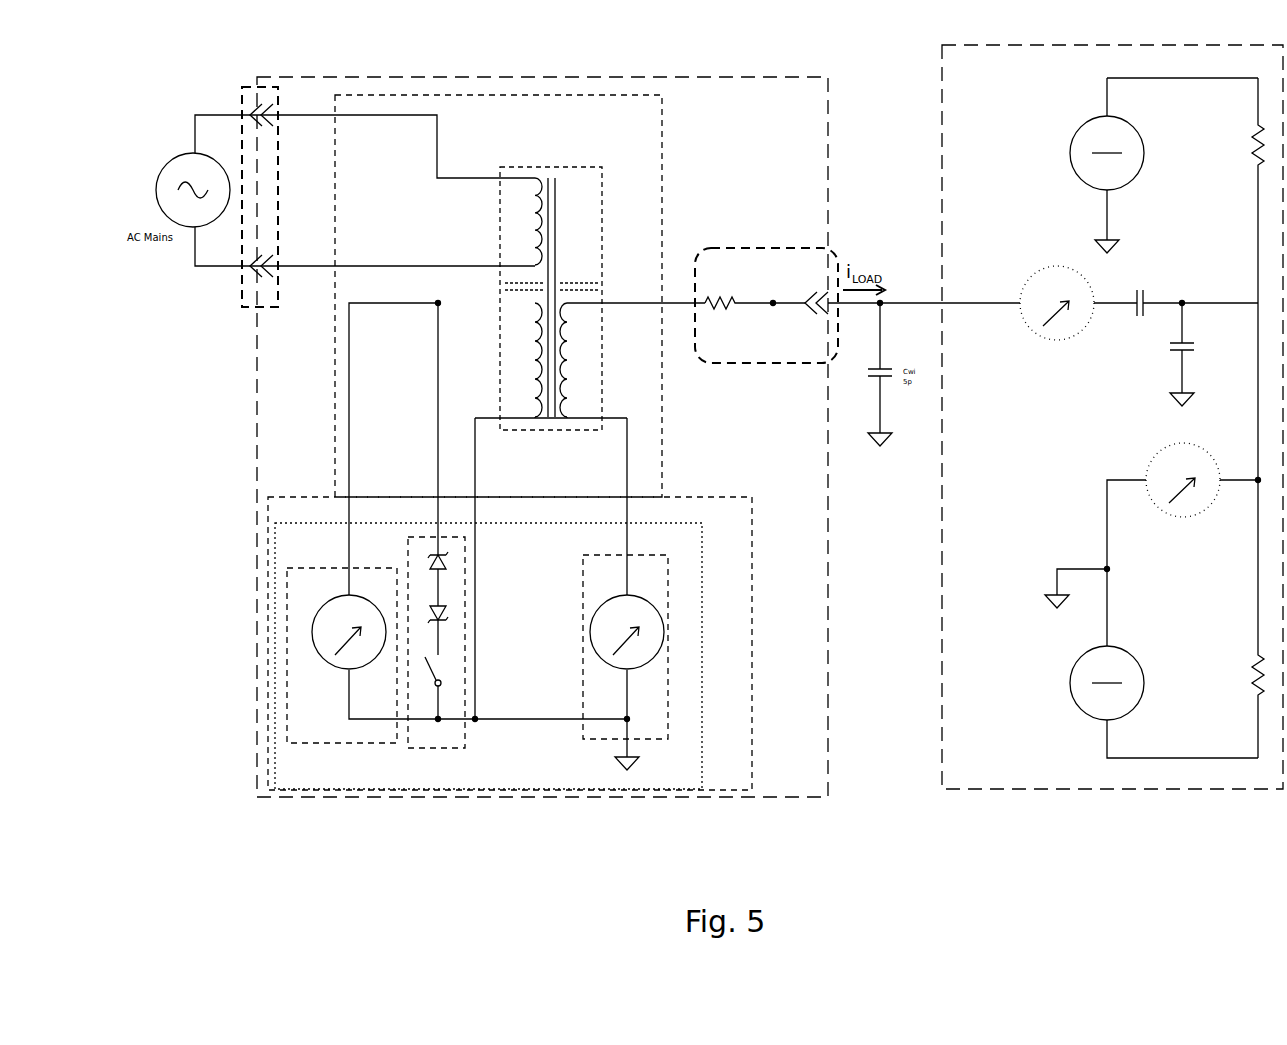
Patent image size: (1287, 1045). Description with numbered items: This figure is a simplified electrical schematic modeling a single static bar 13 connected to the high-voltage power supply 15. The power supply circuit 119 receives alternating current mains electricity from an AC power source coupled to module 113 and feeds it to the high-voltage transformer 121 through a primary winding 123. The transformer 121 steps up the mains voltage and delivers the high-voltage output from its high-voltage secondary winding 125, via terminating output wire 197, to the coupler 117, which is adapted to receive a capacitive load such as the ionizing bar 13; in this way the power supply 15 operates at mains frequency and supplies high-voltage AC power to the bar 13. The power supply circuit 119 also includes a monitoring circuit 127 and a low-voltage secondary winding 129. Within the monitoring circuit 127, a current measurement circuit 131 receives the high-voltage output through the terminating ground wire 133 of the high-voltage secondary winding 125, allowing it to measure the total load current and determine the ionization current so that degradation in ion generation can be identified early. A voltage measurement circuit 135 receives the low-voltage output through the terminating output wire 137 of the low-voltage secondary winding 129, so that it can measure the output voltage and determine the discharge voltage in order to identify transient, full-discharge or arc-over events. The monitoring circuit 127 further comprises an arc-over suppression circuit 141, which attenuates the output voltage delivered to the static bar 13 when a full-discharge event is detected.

The static bar 13 is at (1047, 790).
The power supply 15 is at (788, 800).
The module 113 is at (243, 300).
The coupler 117 is at (730, 247).
The power supply circuit 119 is at (359, 95).
The high-voltage transformer 121 is at (516, 430).
The primary winding 123 is at (538, 203).
The high-voltage secondary winding 125 is at (565, 325).
The monitoring circuit 127 is at (703, 645).
The low-voltage secondary winding 129 is at (538, 310).
The current measurement circuit 131 is at (583, 578).
The terminating ground wire 133 is at (627, 462).
The voltage measurement circuit 135 is at (321, 745).
The terminating output wire 137 is at (424, 305).
The arc-over suppression circuit 141 is at (465, 745).
The terminating output wire 197 is at (625, 300).